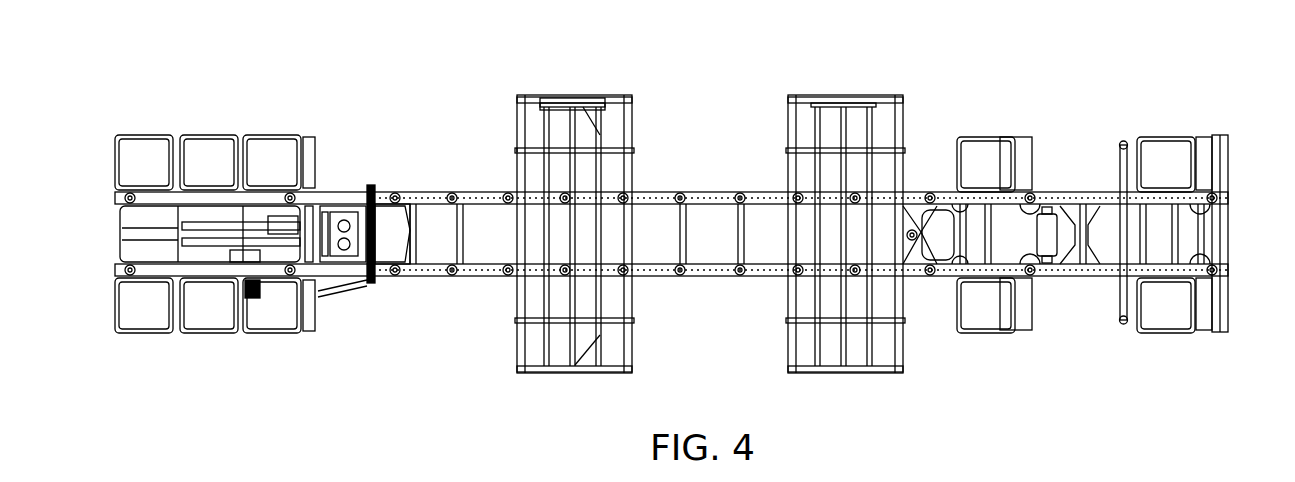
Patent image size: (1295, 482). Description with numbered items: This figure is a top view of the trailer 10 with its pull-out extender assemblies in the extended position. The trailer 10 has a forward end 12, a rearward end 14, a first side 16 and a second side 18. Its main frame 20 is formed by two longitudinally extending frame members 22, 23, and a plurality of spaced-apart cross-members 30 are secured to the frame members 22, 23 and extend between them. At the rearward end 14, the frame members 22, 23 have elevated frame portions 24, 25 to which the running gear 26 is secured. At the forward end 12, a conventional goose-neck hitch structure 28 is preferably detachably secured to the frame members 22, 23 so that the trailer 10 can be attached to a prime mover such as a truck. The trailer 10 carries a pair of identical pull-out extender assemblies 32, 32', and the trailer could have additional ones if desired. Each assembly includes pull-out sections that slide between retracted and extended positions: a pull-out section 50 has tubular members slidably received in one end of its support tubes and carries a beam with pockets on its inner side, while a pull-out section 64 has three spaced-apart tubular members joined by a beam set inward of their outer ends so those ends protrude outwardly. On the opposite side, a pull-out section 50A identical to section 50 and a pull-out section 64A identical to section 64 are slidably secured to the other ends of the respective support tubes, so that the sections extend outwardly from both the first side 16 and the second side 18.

The trailer 10 is at (705, 125).
The forward end 12 is at (112, 186).
The rearward end 14 is at (1250, 190).
The first side 16 is at (673, 365).
The second side 18 is at (713, 186).
The main frame 20 is at (482, 296).
The frame member 22 is at (418, 278).
The frame member 23 is at (463, 194).
The elevated frame portion 24 is at (1067, 278).
The elevated frame portion 25 is at (1066, 190).
The running gear 26 is at (1176, 130).
The goose-neck hitch structure 28 is at (252, 130).
The cross-members 30 is at (408, 232).
The pull-out extender assembly 32 is at (469, 276).
The pull-out extender assembly 32' is at (802, 256).
The pull-out section 50 is at (543, 373).
The pull-out section 50A is at (550, 92).
The pull-out section 64 is at (590, 360).
The pull-out section 64A is at (605, 128).